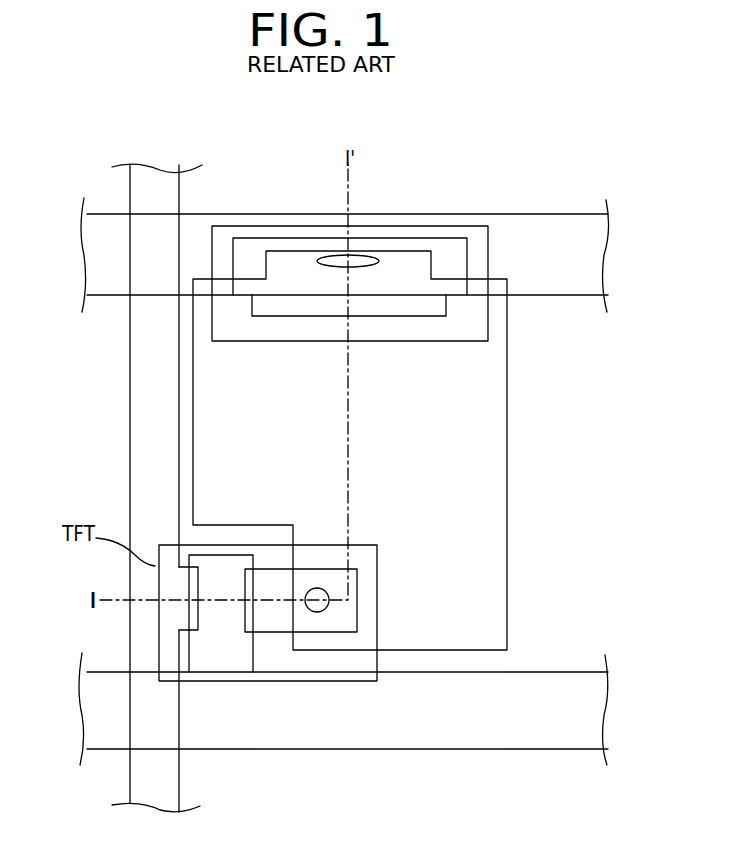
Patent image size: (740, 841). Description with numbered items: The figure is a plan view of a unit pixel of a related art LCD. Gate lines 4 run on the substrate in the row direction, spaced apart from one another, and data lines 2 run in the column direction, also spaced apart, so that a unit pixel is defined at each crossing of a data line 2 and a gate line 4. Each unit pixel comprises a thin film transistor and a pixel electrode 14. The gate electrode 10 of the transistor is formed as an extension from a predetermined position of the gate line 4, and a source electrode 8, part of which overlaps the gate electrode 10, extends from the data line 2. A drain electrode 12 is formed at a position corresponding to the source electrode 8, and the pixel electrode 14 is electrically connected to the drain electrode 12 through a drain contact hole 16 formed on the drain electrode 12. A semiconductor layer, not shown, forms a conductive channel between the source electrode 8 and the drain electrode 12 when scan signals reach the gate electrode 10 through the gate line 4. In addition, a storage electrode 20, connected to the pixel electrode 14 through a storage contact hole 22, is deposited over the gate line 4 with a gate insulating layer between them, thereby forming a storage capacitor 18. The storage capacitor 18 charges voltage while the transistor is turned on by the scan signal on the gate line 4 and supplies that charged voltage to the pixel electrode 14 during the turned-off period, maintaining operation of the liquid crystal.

The data line 2 is at (168, 783).
The gate line 4 is at (557, 232).
The source electrode 8 is at (197, 568).
The gate electrode 10 is at (222, 565).
The drain electrode 12 is at (350, 578).
The pixel electrode 14 is at (487, 450).
The drain contact hole 16 is at (317, 588).
The storage capacitor 18 is at (488, 330).
The storage electrode 20 is at (452, 248).
The storage contact hole 22 is at (362, 258).